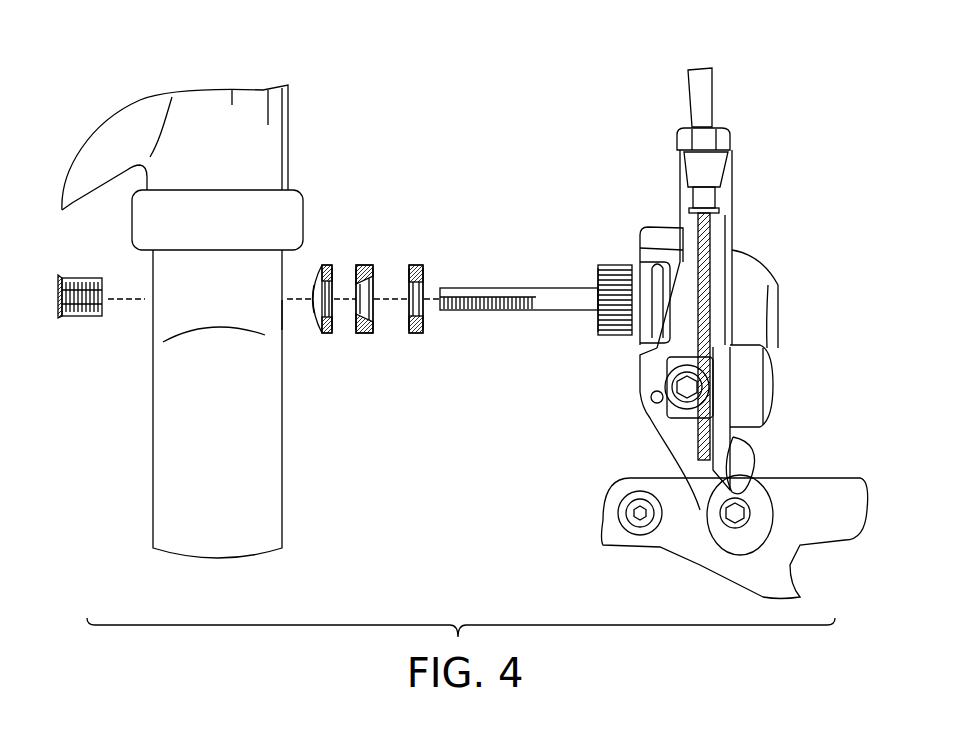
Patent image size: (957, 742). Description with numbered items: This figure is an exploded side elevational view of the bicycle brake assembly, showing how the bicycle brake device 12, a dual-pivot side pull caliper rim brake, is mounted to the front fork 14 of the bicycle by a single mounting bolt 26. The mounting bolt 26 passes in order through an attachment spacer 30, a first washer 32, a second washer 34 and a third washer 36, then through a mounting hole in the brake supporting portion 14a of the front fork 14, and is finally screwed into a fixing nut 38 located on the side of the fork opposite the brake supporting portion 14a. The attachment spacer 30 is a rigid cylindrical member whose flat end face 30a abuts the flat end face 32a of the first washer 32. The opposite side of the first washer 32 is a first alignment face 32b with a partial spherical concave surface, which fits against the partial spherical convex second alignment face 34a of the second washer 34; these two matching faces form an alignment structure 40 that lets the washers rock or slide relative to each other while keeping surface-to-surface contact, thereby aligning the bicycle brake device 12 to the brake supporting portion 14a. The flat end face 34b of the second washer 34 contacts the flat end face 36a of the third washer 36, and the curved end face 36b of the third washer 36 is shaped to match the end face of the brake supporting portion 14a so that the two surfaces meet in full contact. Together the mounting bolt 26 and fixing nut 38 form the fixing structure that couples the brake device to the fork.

The bicycle brake device 12 is at (783, 225).
The front fork 14 is at (295, 470).
The brake supporting portion 14a is at (282, 318).
The mounting bolt 26 is at (558, 288).
The attachment spacer 30 is at (618, 265).
The flat end face 30a is at (598, 325).
The first washer 32 is at (425, 268).
The flat end face 32a is at (423, 327).
The first alignment face 32b is at (409, 325).
The second washer 34 is at (365, 265).
The second alignment face 34a is at (373, 270).
The flat end face 34b is at (356, 330).
The third washer 36 is at (327, 265).
The flat end face 36a is at (330, 270).
The curved end face 36b is at (312, 288).
The fixing nut 38 is at (82, 322).
The alignment structure 40 is at (377, 408).